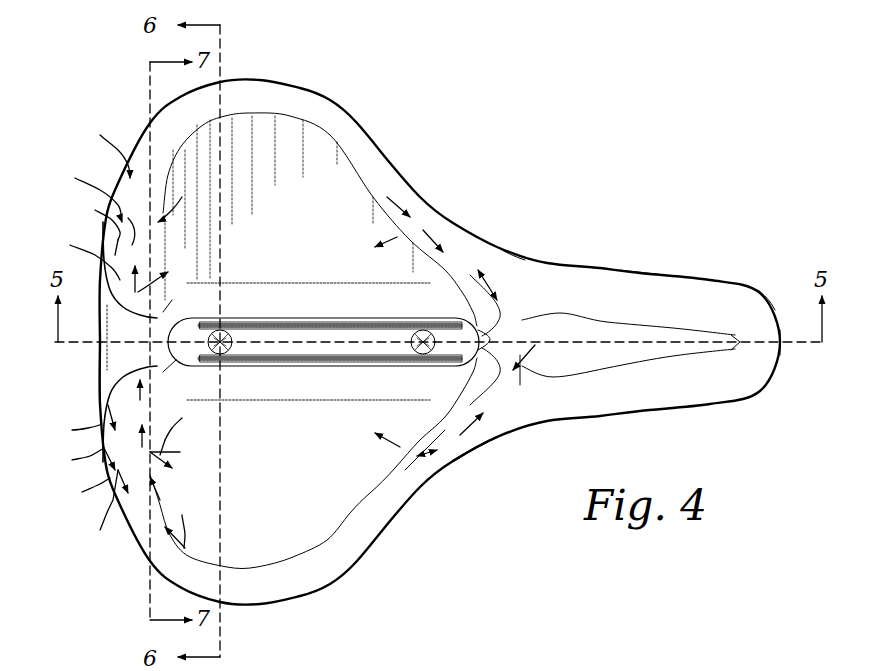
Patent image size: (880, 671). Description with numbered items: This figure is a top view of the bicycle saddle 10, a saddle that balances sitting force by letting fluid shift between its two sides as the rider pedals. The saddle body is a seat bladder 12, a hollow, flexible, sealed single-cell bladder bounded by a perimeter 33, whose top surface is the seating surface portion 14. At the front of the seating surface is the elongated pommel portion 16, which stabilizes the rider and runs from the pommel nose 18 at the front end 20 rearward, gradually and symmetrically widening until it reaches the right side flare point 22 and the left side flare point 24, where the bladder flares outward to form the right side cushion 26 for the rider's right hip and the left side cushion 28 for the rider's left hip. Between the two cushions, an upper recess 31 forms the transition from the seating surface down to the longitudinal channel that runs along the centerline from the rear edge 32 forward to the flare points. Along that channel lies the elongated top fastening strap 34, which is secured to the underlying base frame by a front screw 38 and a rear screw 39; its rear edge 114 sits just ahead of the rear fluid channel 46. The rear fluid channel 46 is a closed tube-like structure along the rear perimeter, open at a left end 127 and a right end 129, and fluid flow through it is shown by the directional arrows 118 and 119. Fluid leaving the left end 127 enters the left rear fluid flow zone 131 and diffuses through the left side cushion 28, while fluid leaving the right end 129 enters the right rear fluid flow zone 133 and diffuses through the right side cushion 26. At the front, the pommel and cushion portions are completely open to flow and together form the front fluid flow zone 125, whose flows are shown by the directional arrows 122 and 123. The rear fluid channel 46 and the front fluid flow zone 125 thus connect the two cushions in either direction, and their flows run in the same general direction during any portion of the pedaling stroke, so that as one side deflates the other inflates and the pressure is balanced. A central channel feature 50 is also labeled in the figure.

The bicycle saddle 10 is at (440, 359).
The seat bladder 12 is at (358, 112).
The seating surface portion 14 is at (294, 217).
The pommel portion 16 is at (642, 268).
The pommel nose 18 is at (768, 282).
The front end 20 is at (786, 350).
The right side flare point 22 is at (500, 445).
The left side flare point 24 is at (505, 247).
The right side cushion 26 is at (274, 459).
The left side cushion 28 is at (274, 271).
The upper recess 31 is at (163, 360).
The rear edge 32 is at (100, 380).
The perimeter 33 is at (335, 100).
The top fastening strap 34 is at (345, 325).
The front screw 38 is at (403, 356).
The rear screw 39 is at (222, 356).
The rear fluid channel 46 is at (100, 355).
The central channel 50 is at (486, 325).
The rear edge of the top fastening strap 114 is at (165, 322).
The directional arrows 118 is at (136, 366).
The directional arrows 119 is at (126, 334).
The directional arrows 122 is at (380, 245).
The directional arrows 123 is at (447, 230).
The front fluid flow zone 125 is at (560, 312).
The left end 127 is at (103, 263).
The right end 129 is at (77, 422).
The left rear fluid flow zone 131 is at (88, 204).
The right rear fluid flow zone 133 is at (105, 440).